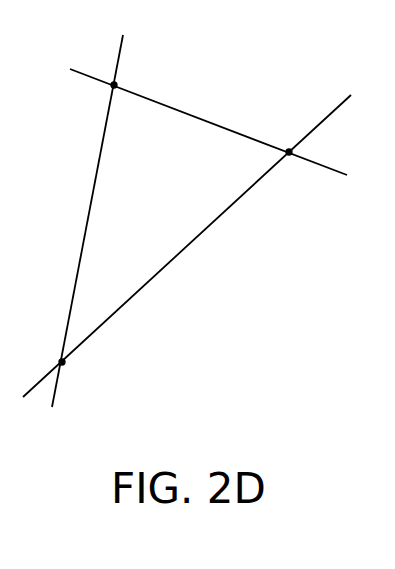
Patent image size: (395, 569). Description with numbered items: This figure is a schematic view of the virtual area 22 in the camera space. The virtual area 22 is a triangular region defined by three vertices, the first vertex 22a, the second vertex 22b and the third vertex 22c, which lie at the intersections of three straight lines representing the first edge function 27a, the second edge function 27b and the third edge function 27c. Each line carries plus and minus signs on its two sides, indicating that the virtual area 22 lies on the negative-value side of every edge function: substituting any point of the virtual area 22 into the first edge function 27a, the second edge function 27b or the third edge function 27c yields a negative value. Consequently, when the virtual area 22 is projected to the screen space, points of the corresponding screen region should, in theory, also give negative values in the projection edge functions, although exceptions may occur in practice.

The virtual area 22 is at (140, 175).
The first vertex 22a is at (115, 84).
The second vertex 22b is at (290, 154).
The third vertex 22c is at (64, 362).
The first edge function 27a is at (73, 287).
The second edge function 27b is at (168, 267).
The third edge function 27c is at (230, 128).